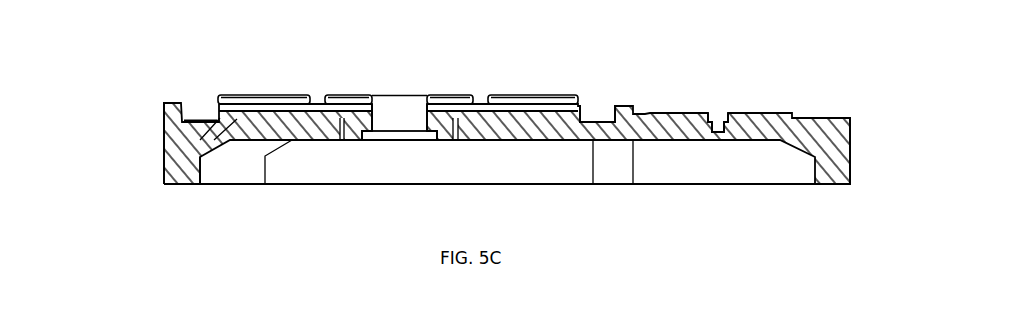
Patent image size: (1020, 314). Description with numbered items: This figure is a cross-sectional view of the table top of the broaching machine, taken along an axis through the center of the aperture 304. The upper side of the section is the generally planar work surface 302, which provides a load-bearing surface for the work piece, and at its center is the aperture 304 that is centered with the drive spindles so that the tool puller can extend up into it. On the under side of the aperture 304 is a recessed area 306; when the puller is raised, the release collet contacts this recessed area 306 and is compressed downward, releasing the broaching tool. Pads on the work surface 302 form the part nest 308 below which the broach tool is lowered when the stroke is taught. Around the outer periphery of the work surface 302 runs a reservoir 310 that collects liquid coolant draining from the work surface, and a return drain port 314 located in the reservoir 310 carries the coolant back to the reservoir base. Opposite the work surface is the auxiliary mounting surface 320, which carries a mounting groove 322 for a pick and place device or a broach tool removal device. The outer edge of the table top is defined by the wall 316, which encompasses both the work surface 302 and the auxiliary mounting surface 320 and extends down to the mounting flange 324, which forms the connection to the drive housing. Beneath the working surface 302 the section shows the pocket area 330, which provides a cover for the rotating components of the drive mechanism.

The work surface 302 is at (287, 95).
The aperture 304 is at (412, 112).
The recessed area 306 is at (417, 139).
The part nest 308 is at (372, 95).
The reservoir 310 is at (595, 115).
The return drain port 314 is at (233, 103).
The wall 316 is at (163, 142).
The auxiliary mounting surface 320 is at (768, 113).
The mounting groove 322 is at (719, 111).
The mounting flange 324 is at (178, 185).
The pocket area 330 is at (330, 186).